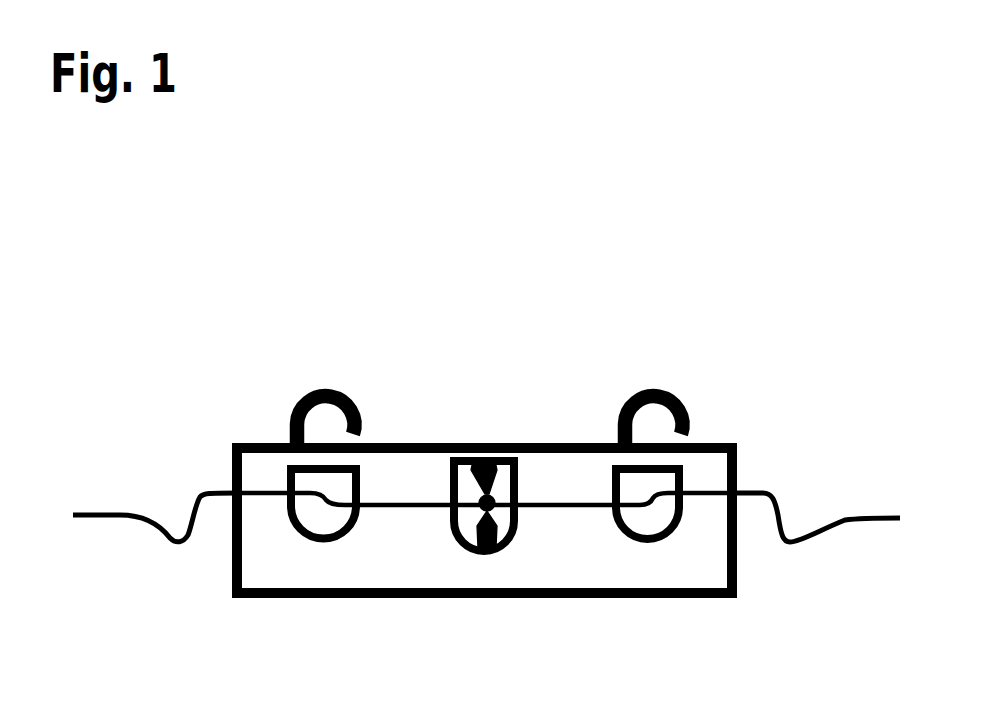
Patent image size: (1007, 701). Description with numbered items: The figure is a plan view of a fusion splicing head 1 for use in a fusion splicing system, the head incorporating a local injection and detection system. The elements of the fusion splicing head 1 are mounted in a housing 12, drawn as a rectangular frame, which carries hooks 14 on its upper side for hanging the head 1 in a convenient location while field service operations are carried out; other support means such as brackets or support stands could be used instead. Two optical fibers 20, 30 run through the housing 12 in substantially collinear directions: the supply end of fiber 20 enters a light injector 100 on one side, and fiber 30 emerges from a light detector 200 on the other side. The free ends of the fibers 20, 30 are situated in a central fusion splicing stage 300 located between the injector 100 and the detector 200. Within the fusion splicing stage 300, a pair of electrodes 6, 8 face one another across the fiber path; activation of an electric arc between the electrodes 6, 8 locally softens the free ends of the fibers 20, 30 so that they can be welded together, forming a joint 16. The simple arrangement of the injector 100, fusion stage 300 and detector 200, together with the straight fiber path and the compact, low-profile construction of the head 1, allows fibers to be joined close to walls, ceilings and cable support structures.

The fusion splicing head 1 is at (140, 308).
The housing 12 is at (233, 458).
The hooks 14 is at (344, 398).
The joint 16 is at (484, 500).
The electrode 6 is at (480, 489).
The electrode 8 is at (497, 533).
The optical fiber 20 is at (112, 515).
The optical fiber 30 is at (849, 518).
The light injector 100 is at (296, 536).
The light detector 200 is at (663, 540).
The fusion splicing stage 300 is at (458, 543).